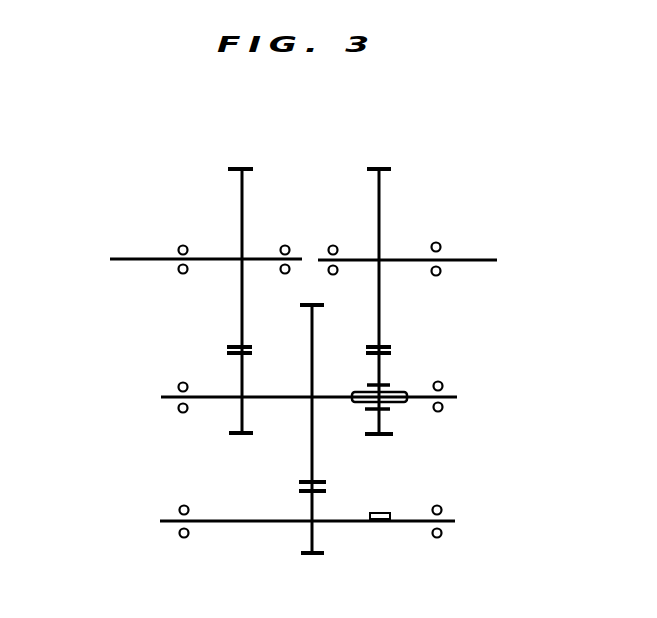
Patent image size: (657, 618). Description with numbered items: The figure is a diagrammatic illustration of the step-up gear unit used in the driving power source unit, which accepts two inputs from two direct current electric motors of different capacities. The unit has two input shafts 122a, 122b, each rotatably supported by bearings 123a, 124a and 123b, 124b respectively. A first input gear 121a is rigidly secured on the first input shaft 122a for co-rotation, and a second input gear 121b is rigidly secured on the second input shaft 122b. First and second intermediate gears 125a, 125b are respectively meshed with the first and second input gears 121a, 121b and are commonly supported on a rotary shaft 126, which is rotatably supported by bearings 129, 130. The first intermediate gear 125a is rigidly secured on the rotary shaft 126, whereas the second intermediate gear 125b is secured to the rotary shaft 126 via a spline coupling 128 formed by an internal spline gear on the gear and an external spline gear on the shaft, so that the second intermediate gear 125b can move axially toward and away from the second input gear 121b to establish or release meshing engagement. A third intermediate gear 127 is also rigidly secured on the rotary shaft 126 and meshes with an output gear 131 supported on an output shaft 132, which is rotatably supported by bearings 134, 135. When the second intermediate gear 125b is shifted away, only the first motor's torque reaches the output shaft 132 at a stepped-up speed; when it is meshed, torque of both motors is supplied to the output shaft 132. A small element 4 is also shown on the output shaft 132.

The first input gear 121a is at (240, 189).
The second input gear 121b is at (381, 190).
The first input shaft 122a is at (205, 258).
The second input shaft 122b is at (410, 258).
The bearing 123a is at (178, 250).
The bearing 123b is at (441, 247).
The bearing 124a is at (285, 245).
The bearing 124b is at (333, 245).
The first intermediate gear 125a is at (239, 373).
The second intermediate gear 125b is at (383, 365).
The rotary shaft 126 is at (290, 397).
The third intermediate gear 127 is at (310, 448).
The spline coupling 128 is at (403, 390).
The bearing 129 is at (178, 387).
The bearing 130 is at (443, 386).
The output gear 131 is at (315, 537).
The output shaft 132 is at (247, 523).
The bearing 134 is at (179, 510).
The bearing 135 is at (442, 510).
The bearing 4 is at (377, 513).